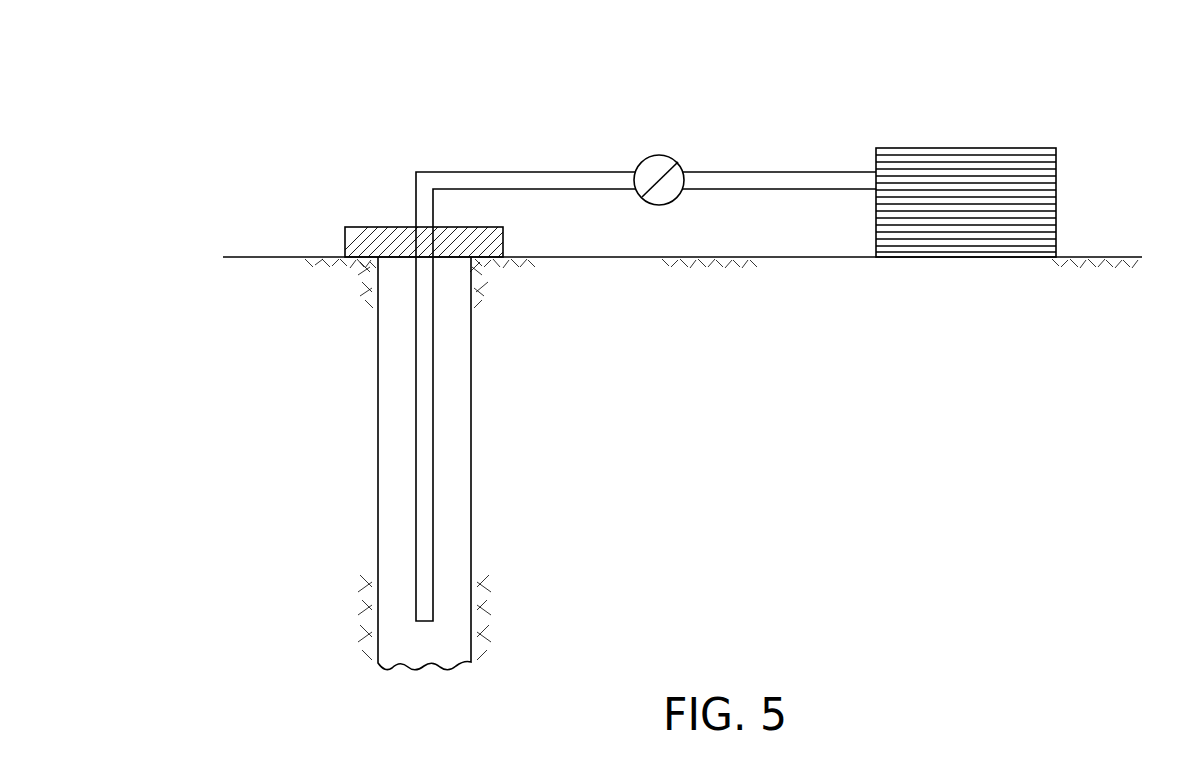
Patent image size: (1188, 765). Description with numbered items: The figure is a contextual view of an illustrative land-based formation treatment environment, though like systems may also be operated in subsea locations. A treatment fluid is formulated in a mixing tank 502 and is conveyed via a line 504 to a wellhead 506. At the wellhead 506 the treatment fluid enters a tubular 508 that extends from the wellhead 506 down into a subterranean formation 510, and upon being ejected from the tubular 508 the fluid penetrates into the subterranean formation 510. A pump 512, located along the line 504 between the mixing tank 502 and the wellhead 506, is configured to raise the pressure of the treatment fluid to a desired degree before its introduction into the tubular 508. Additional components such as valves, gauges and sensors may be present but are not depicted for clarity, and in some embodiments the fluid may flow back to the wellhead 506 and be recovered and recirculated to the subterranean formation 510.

The mixing tank 502 is at (1043, 148).
The line 504 is at (565, 170).
The wellhead 506 is at (343, 240).
The tubular 508 is at (433, 381).
The subterranean formation 510 is at (297, 498).
The pump 512 is at (672, 155).